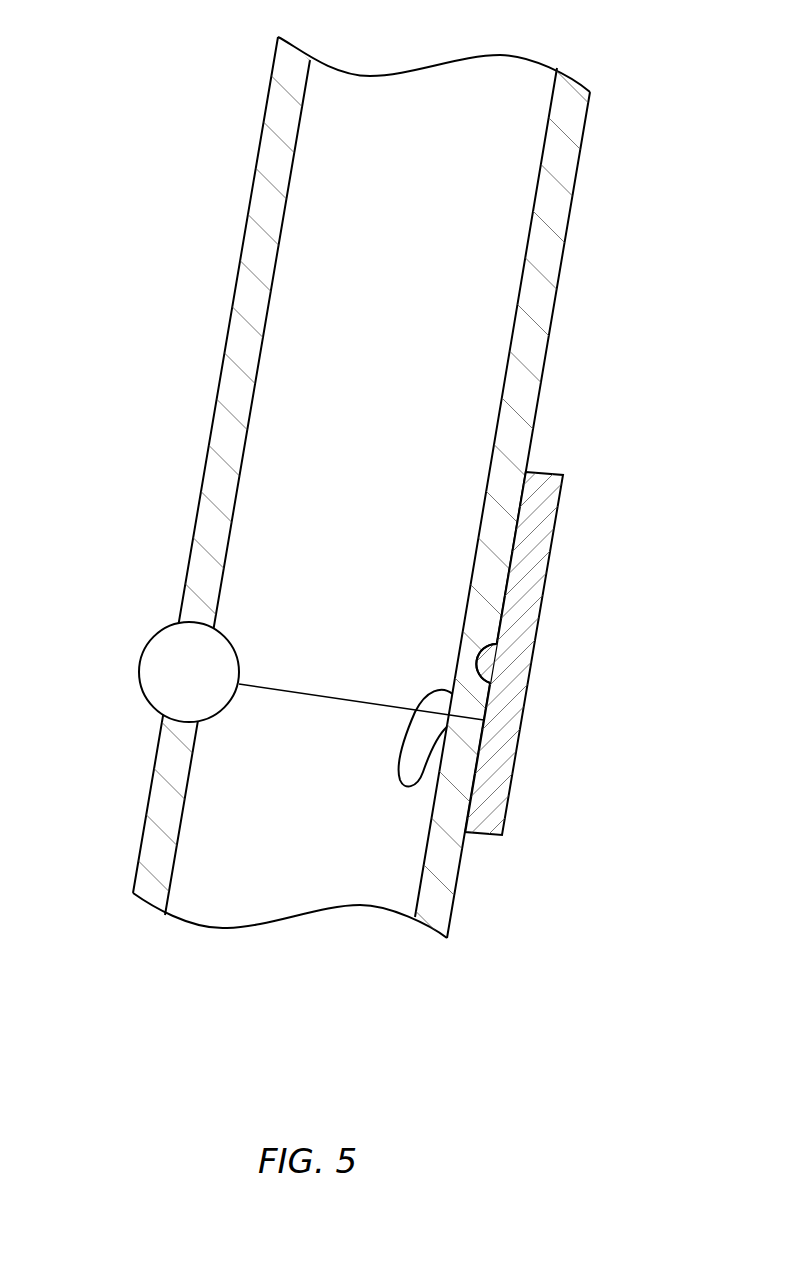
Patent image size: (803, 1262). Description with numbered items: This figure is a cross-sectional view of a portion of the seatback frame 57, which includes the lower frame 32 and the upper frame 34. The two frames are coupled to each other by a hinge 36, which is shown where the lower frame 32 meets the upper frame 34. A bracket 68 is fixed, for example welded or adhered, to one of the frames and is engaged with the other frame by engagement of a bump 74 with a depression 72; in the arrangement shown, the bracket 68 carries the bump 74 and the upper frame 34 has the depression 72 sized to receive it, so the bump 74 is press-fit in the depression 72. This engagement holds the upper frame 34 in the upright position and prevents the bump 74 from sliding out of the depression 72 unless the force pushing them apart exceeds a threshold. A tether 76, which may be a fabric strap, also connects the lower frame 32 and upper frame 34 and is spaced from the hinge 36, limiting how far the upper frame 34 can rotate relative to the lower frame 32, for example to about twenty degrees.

The lower frame 32 is at (457, 882).
The upper frame 34 is at (573, 190).
The hinge 36 is at (147, 648).
The seatback frame 57 is at (650, 348).
The bracket 68 is at (544, 587).
The depression 72 is at (486, 647).
The bump 74 is at (480, 660).
The tether 76 is at (397, 783).